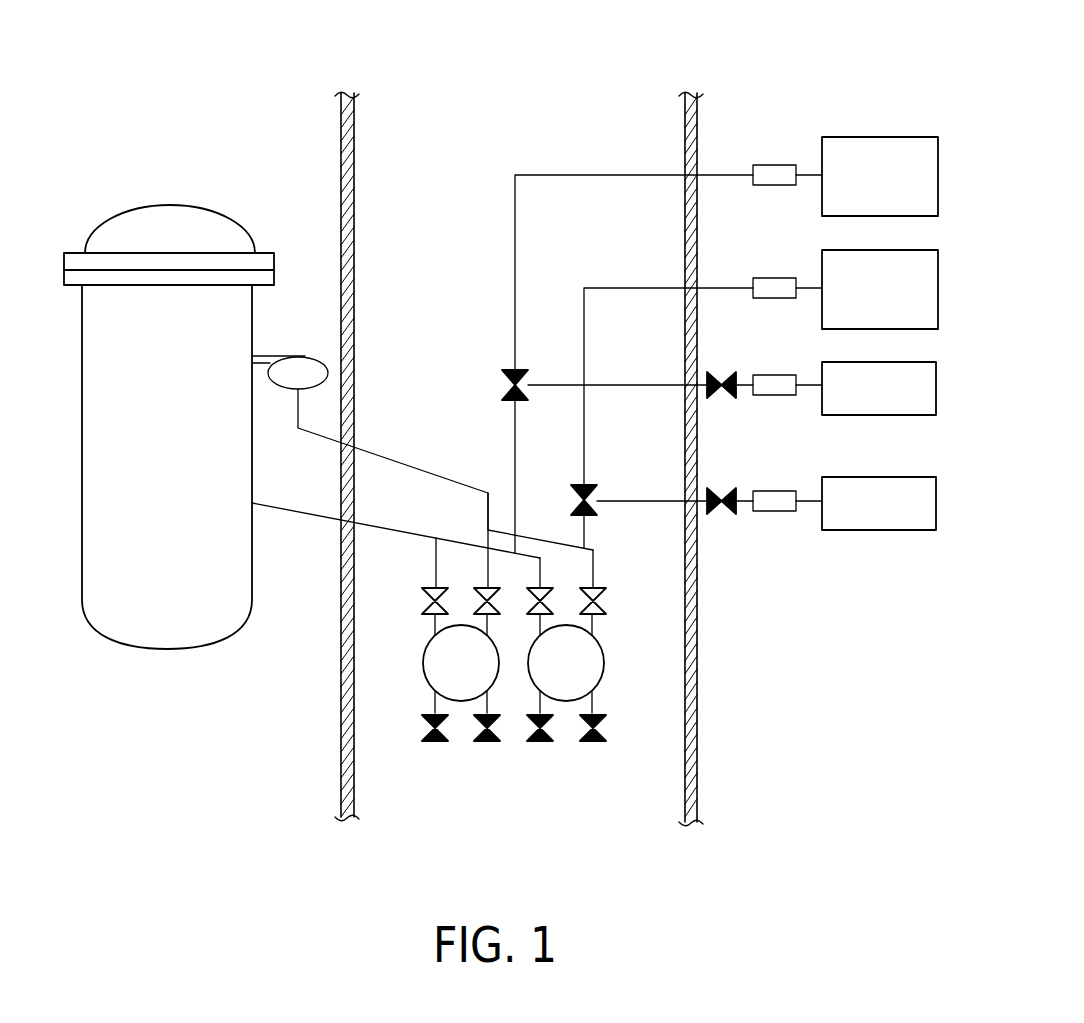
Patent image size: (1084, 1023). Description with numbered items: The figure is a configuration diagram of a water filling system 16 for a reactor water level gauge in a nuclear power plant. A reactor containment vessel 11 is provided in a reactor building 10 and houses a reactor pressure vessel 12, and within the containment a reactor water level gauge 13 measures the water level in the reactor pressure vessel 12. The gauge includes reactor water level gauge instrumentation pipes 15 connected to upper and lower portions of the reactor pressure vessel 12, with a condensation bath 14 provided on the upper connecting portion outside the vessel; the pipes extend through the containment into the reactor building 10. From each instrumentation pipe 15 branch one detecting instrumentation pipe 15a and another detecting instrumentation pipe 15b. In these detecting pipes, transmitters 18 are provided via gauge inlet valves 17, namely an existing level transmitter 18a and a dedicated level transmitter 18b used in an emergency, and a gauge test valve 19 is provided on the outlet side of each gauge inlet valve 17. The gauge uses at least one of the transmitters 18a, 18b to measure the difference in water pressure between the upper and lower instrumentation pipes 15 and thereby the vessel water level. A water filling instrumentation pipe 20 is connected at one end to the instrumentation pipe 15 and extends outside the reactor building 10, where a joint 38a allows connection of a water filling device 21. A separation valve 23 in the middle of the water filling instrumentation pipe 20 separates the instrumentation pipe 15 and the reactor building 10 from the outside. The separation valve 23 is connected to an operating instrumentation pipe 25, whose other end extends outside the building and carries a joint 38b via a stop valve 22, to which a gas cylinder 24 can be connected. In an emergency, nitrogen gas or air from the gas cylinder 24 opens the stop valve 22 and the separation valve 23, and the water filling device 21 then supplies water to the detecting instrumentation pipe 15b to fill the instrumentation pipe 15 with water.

The reactor building 10 is at (698, 114).
The reactor containment vessel 11 is at (341, 113).
The reactor pressure vessel 12 is at (226, 214).
The reactor water level gauge 13 is at (318, 357).
The condensation bath 14 is at (286, 354).
The reactor water level gauge instrumentation pipe in the reactor building 15 is at (400, 462).
The one detecting instrumentation pipe 15a is at (488, 578).
The other detecting instrumentation pipe 15b is at (596, 556).
The water filling system for a reactor water level gauge 16 is at (786, 106).
The gauge inlet valve 17 is at (617, 605).
The transmitter 18 is at (523, 663).
The existing transmitter 18a is at (606, 677).
The dedicated transmitter 18b is at (424, 660).
The gauge test valve 19 is at (617, 731).
The water filling instrumentation pipe 20 is at (628, 288).
The water filling device 21 is at (882, 250).
The stop valve 22 is at (721, 487).
The separation valve 23 is at (586, 485).
The gas cylinder 24 is at (882, 477).
The operating instrumentation pipe 25 is at (625, 501).
The joint 38a is at (760, 278).
The joint 38b is at (760, 491).